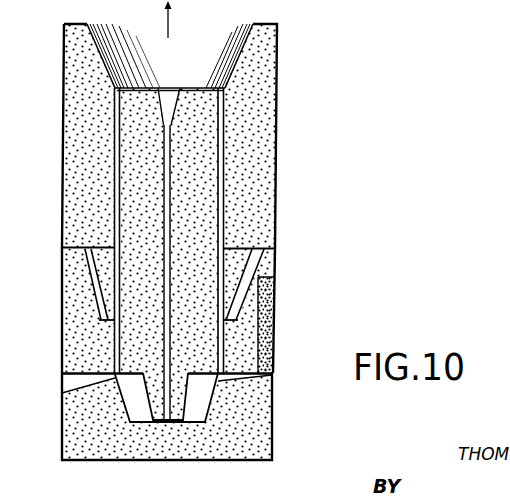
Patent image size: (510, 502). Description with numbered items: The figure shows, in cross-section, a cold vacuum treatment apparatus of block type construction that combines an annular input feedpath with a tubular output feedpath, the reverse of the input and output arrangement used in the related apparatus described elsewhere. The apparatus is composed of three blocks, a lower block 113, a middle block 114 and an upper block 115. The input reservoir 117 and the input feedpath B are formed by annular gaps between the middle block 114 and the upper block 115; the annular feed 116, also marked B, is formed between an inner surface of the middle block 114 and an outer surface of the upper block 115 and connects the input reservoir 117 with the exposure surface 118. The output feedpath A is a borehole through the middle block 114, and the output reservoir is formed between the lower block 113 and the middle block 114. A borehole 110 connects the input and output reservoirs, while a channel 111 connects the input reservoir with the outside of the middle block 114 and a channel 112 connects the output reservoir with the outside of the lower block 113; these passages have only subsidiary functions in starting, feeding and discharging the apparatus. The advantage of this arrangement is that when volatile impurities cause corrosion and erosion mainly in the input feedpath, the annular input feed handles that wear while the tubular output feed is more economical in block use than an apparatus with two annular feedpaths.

The borehole 110 is at (258, 328).
The channel 111 is at (266, 262).
The channel 112 is at (72, 383).
The lower block 113 is at (260, 427).
The middle block 114 is at (75, 323).
The upper block 115 is at (72, 115).
The annular feed 116 is at (114, 167).
The input reservoir 117 is at (88, 272).
The exposure surface 118 is at (205, 87).
The output feedpath A is at (171, 197).
The input feedpath B is at (224, 135).